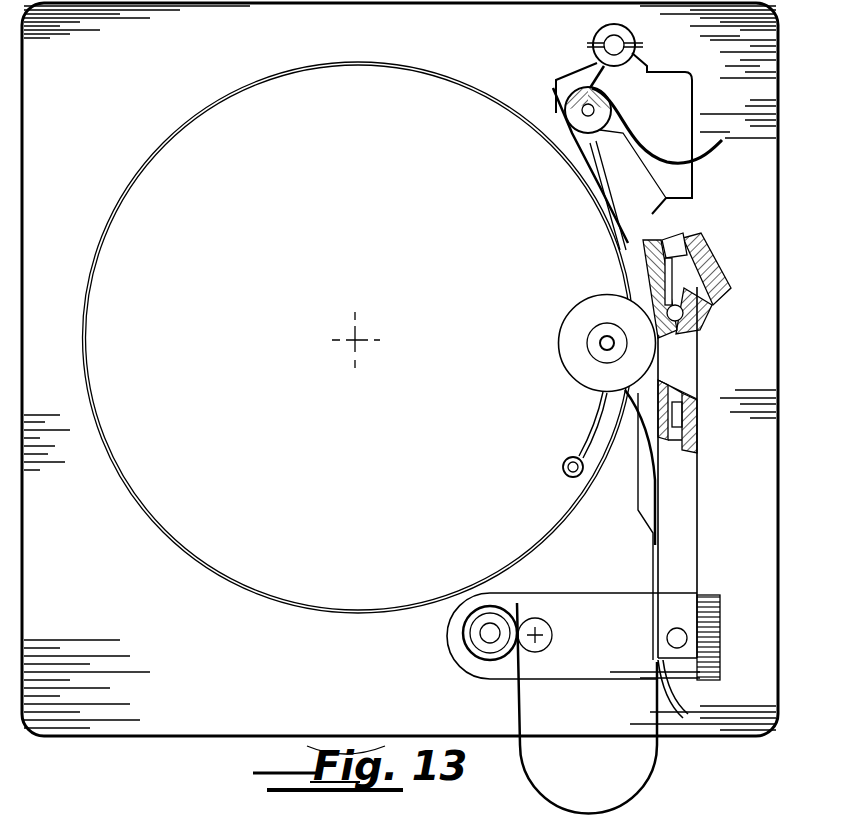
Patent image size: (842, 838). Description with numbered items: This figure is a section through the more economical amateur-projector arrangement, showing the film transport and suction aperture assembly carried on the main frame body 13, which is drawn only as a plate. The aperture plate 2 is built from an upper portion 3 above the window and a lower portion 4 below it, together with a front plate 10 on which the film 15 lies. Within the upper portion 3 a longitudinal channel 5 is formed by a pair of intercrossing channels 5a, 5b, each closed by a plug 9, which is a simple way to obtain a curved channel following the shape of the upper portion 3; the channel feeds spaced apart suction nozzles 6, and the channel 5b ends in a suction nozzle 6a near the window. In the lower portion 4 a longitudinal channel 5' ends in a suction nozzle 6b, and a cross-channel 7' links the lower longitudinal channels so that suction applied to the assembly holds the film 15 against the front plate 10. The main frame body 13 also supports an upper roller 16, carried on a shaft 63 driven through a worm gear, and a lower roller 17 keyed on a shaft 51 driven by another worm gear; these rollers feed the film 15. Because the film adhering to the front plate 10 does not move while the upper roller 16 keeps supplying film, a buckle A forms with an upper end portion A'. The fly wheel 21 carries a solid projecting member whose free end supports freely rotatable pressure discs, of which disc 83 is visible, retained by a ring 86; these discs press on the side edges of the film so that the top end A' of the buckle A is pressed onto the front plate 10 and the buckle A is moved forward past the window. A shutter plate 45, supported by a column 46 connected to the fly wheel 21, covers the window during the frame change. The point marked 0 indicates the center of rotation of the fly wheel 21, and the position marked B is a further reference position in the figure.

The main frame body 13 is at (742, 98).
The fly wheel 21 is at (278, 586).
The turntable center 0 is at (357, 338).
The shaft 63 is at (617, 112).
The upper roller 16 is at (612, 101).
The film 15 is at (708, 155).
The upper portion 3 is at (640, 187).
The position B is at (598, 187).
The aperture plate 2 is at (713, 246).
The longitudinal channel 5 is at (712, 269).
The intercrossing channel 5a is at (728, 283).
The intercrossing channel 5b is at (690, 237).
The suction nozzle 6 is at (650, 290).
The plug 9 is at (686, 318).
The upper end portion of buckle A' is at (708, 345).
The suction nozzle 6b is at (673, 383).
The longitudinal channel 5' is at (700, 416).
The lower portion 4 is at (697, 477).
The buckle A is at (629, 525).
The front plate 10 is at (650, 556).
The ring 86 is at (585, 348).
The pressure disc 83 is at (577, 360).
The suction nozzle 6a is at (655, 348).
The shutter plate 45 is at (592, 412).
The column 46 is at (564, 476).
The shaft 51 is at (485, 634).
The lower roller 17 is at (492, 660).
The cross-channel 7' is at (711, 637).